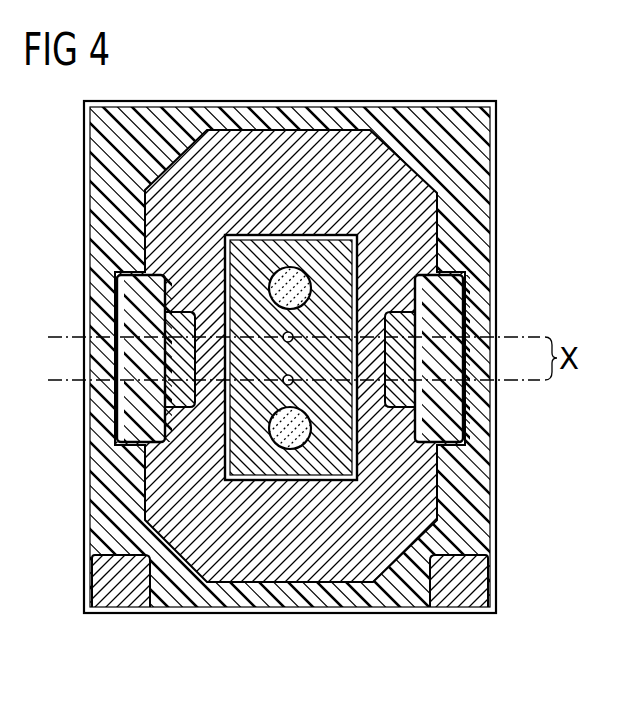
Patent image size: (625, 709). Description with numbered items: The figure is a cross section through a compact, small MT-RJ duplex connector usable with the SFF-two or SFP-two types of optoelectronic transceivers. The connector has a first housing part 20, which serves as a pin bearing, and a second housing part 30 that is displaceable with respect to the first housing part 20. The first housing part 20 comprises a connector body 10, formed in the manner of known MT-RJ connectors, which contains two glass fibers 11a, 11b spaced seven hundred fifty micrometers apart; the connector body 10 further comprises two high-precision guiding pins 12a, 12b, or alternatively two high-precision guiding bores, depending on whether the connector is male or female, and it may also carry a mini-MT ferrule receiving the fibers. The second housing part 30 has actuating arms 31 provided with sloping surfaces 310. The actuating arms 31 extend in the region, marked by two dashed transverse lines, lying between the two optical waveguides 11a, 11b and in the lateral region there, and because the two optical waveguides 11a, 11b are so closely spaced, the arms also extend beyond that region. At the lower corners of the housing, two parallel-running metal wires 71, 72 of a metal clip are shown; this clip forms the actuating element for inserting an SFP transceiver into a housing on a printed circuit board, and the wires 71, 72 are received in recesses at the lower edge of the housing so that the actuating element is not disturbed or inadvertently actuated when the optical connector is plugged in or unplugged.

The connector body 10 is at (328, 253).
The glass fiber 11a is at (288, 332).
The glass fiber 11b is at (288, 386).
The guiding pin 12a is at (290, 280).
The guiding pin 12b is at (290, 437).
The first housing part 20 is at (328, 147).
The second housing part 30 is at (447, 127).
The actuating arm 31 is at (128, 302).
The sloping surface 310 is at (182, 395).
The metal wire 71 is at (462, 592).
The metal wire 72 is at (117, 592).